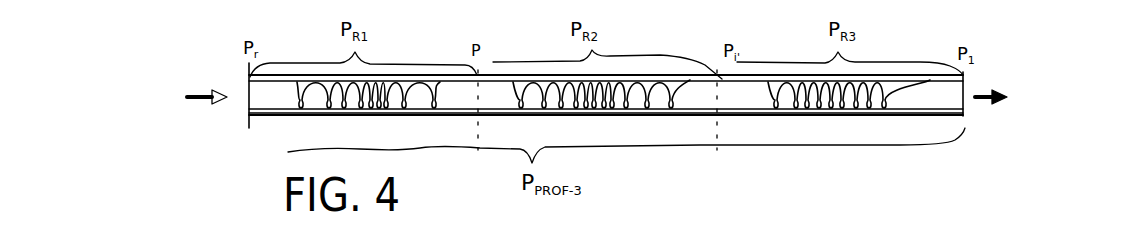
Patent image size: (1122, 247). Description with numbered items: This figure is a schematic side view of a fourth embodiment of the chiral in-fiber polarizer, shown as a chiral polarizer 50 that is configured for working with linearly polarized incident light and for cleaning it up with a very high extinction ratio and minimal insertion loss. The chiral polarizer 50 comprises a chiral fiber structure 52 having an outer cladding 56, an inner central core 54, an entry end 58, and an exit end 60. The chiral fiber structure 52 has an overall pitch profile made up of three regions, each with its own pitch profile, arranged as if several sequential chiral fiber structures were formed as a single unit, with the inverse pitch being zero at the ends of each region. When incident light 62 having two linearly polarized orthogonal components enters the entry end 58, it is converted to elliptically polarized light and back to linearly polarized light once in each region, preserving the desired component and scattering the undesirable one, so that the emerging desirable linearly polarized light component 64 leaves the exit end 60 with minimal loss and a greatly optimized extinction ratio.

The chiral polarizer 50 is at (792, 168).
The chiral fiber structure 52 is at (380, 78).
The inner central core 54 is at (262, 95).
The outer cladding 56 is at (273, 117).
The entry end 58 is at (247, 81).
The exit end 60 is at (965, 108).
The incident light 62 is at (192, 85).
The desirable linearly polarized light component 64 is at (980, 85).